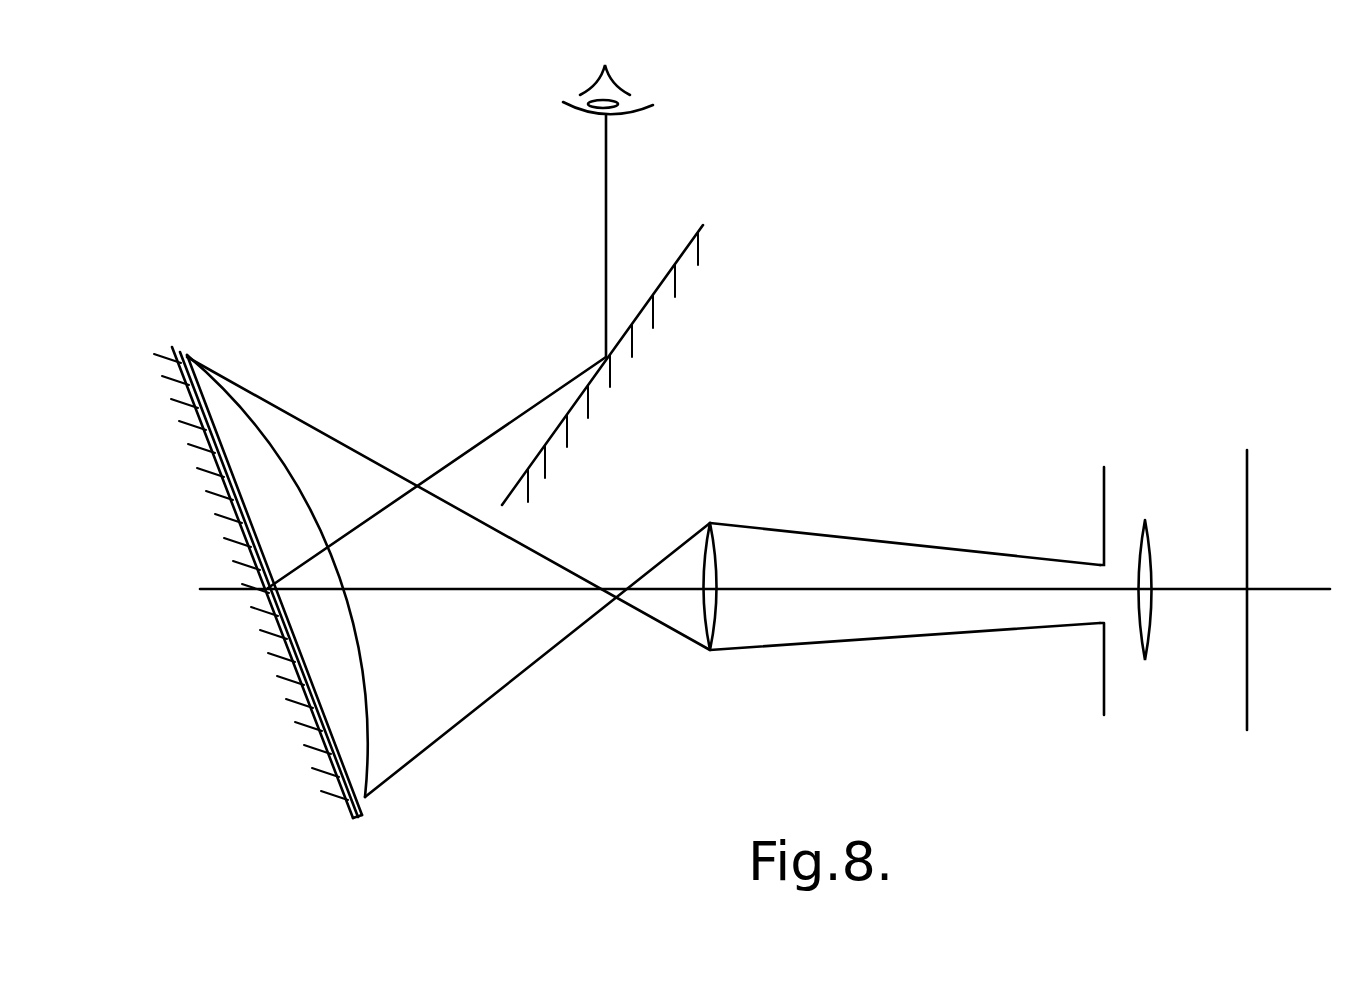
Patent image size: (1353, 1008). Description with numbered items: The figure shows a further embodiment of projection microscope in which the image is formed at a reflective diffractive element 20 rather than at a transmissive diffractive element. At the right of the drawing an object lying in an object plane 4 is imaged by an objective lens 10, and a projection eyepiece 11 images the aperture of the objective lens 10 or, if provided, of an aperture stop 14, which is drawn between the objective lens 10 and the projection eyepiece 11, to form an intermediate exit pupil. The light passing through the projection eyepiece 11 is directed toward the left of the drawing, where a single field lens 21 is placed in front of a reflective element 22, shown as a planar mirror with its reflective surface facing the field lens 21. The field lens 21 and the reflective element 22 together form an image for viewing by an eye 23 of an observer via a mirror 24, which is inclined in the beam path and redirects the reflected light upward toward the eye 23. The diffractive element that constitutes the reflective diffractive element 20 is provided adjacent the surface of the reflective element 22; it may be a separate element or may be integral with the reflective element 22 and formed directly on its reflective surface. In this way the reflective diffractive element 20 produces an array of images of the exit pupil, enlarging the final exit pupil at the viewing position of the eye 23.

The object plane 4 is at (1247, 710).
The objective lens 10 is at (1148, 525).
The projection eyepiece 11 is at (712, 523).
The aperture stop 14 is at (1104, 487).
The reflective diffractive element 20 is at (375, 822).
The field lens 21 is at (367, 797).
The reflective element 22 is at (318, 755).
The eye 23 is at (612, 93).
The mirror 24 is at (626, 330).